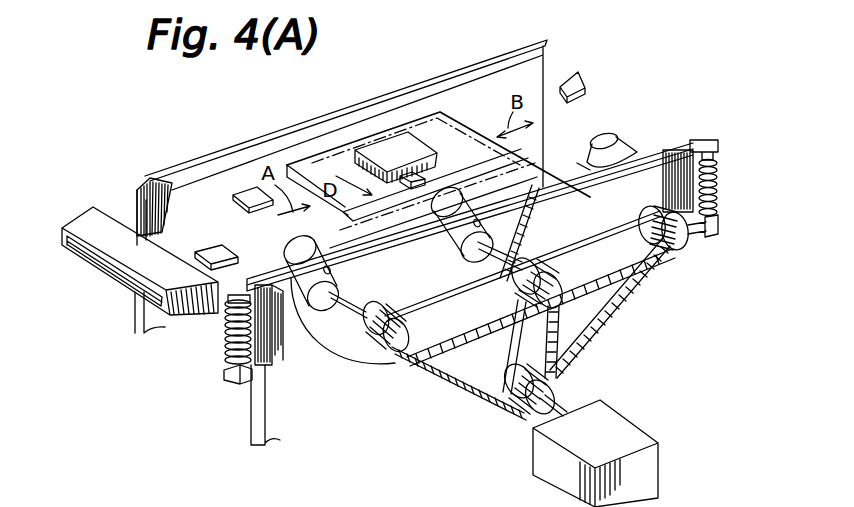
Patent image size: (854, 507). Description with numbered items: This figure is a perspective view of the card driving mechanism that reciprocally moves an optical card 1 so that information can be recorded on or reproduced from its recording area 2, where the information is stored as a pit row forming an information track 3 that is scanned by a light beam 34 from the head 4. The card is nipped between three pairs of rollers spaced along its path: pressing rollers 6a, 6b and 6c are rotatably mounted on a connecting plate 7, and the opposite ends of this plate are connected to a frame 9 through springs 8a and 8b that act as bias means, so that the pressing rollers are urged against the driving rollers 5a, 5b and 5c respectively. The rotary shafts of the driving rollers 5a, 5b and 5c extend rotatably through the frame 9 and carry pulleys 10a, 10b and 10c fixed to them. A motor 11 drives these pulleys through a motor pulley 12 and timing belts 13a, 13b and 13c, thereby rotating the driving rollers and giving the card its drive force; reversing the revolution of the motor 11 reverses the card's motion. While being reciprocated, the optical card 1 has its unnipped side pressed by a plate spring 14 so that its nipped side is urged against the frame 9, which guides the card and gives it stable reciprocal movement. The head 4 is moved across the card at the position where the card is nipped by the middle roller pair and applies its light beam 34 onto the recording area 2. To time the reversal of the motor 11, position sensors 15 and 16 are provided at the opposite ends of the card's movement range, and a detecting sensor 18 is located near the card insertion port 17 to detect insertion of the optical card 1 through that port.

The optical card 1 is at (527, 185).
The recording area 2 is at (317, 173).
The information track 3 is at (342, 205).
The head 4 is at (390, 148).
The driving roller 5a is at (300, 345).
The driving roller 5b is at (477, 235).
The driving roller 5c is at (580, 162).
The pressing roller 6a is at (288, 238).
The pressing roller 6b is at (427, 200).
The pressing roller 6c is at (618, 150).
The connecting plate 7 is at (720, 140).
The spring 8a is at (227, 350).
The spring 8b is at (720, 198).
The frame 9 is at (263, 407).
The pulley 10a is at (353, 337).
The pulley 10b is at (555, 283).
The pulley 10c is at (688, 242).
The motor 11 is at (610, 423).
The motor pulley 12 is at (555, 380).
The timing belt 13a is at (453, 387).
The timing belt 13b is at (500, 333).
The timing belt 13c is at (627, 300).
The plate spring 14 is at (510, 72).
The position sensor 15 is at (245, 193).
The position sensor 16 is at (565, 72).
The card insertion port 17 is at (88, 227).
The detecting sensor 18 is at (213, 250).
The light beam 34 is at (447, 157).